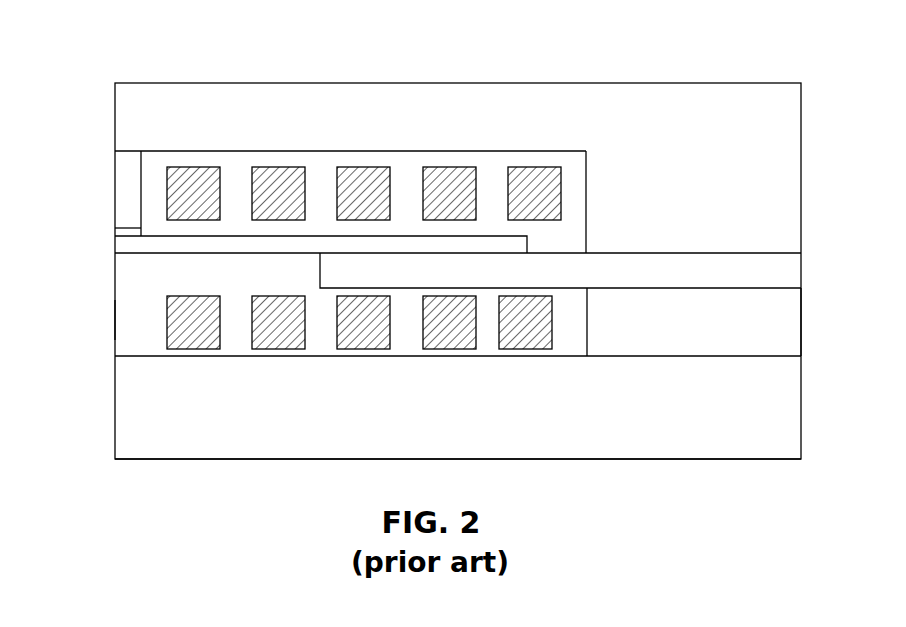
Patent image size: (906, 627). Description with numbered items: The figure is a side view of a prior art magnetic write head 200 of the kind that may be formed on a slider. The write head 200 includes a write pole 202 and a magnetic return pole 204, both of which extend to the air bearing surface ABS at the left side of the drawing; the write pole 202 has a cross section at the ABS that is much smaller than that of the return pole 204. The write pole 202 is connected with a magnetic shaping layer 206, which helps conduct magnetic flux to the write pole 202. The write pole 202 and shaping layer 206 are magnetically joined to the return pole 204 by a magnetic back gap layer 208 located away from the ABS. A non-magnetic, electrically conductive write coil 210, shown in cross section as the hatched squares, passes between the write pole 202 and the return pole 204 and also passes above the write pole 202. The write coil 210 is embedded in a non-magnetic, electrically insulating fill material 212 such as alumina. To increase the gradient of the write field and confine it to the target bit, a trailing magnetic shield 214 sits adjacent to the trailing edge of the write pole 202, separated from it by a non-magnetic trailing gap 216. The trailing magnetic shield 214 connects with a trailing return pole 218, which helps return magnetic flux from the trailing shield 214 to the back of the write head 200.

The magnetic write head 200 is at (446, 78).
The write pole 202 is at (127, 245).
The magnetic return pole 204 is at (456, 406).
The magnetic shaping layer 206 is at (700, 272).
The magnetic back gap layer 208 is at (705, 323).
The write coil 210 is at (562, 195).
The fill material 212 is at (575, 170).
The trailing magnetic shield 214 is at (125, 190).
The non-magnetic trailing gap 216 is at (120, 230).
The trailing return pole 218 is at (440, 117).
The air bearing surface ABS is at (117, 315).